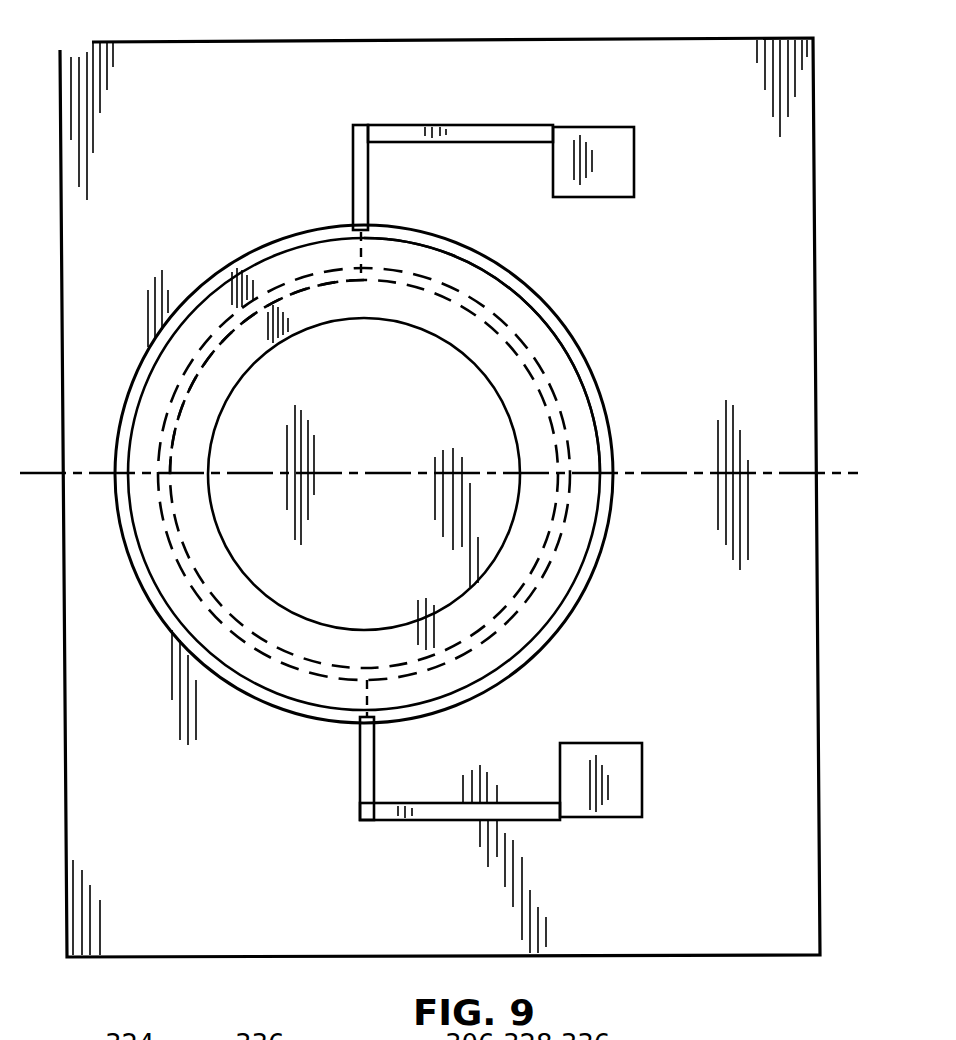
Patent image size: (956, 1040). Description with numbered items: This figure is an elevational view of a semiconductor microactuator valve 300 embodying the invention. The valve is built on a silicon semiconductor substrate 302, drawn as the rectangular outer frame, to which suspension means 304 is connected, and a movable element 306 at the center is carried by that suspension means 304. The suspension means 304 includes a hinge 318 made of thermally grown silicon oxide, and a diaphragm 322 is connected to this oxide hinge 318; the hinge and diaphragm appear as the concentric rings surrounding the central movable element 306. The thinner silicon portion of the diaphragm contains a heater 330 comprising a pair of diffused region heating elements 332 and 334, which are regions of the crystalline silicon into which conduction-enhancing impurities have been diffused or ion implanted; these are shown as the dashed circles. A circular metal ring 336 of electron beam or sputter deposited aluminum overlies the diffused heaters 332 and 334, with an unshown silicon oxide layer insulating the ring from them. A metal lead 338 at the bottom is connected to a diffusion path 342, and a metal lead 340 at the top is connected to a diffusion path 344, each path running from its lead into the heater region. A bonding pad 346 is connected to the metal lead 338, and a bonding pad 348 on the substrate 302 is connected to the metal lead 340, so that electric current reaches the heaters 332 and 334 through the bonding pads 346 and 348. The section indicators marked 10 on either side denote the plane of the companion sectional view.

The semiconductor microactuator valve 300 is at (572, 37).
The silicon semiconductor substrate 302 is at (316, 945).
The suspension means 304 is at (595, 386).
The movable element 306 is at (395, 464).
The hinge 318 is at (567, 340).
The diaphragm 322 is at (489, 290).
The heater 330 is at (275, 298).
The diffused region heating element 332 is at (223, 327).
The diffused region heating element 334 is at (252, 312).
The circular metal ring 336 is at (497, 365).
The metal lead 338 is at (374, 757).
The metal lead 340 is at (353, 157).
The diffusion path 342 is at (364, 706).
The diffusion path 344 is at (367, 246).
The bonding pad 346 is at (642, 778).
The bonding pad 348 is at (634, 187).
The section line 10- 10 is at (36, 500).